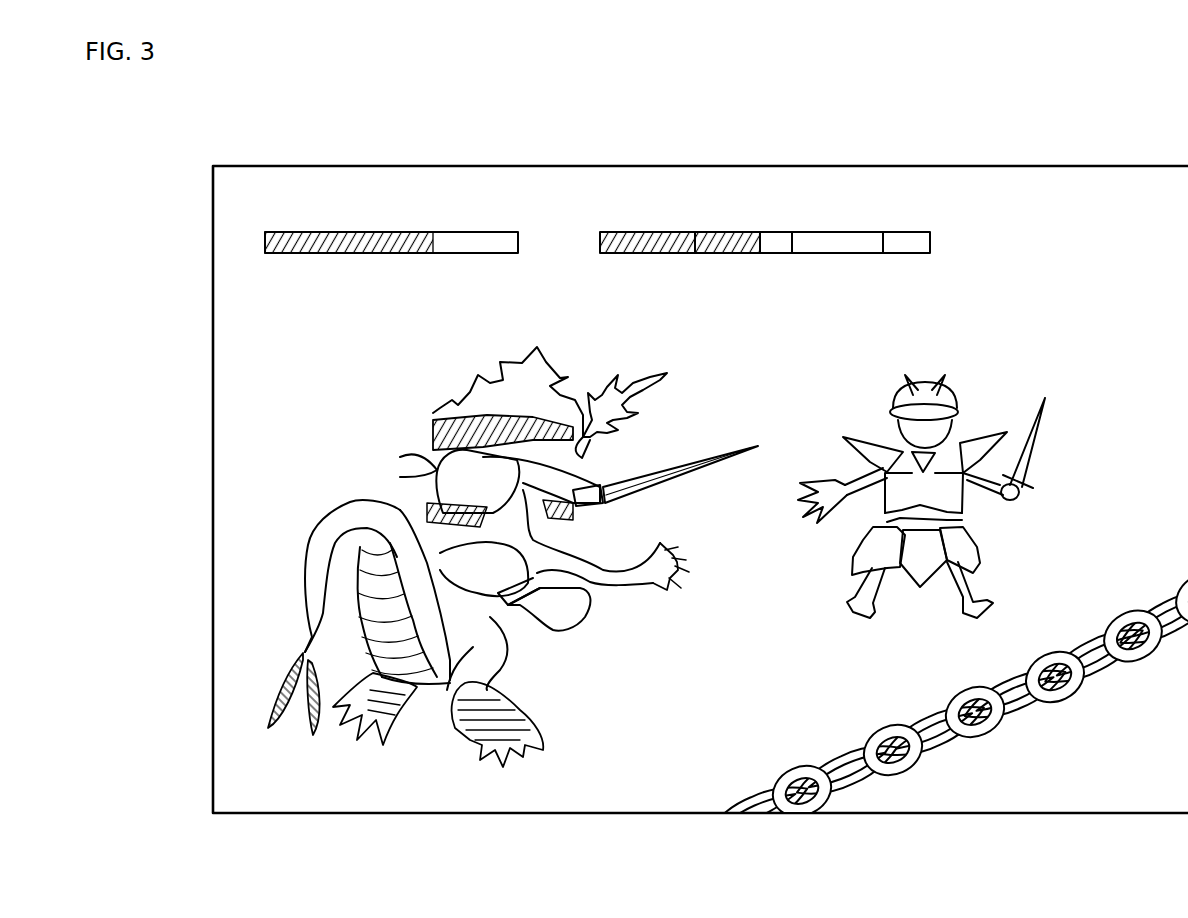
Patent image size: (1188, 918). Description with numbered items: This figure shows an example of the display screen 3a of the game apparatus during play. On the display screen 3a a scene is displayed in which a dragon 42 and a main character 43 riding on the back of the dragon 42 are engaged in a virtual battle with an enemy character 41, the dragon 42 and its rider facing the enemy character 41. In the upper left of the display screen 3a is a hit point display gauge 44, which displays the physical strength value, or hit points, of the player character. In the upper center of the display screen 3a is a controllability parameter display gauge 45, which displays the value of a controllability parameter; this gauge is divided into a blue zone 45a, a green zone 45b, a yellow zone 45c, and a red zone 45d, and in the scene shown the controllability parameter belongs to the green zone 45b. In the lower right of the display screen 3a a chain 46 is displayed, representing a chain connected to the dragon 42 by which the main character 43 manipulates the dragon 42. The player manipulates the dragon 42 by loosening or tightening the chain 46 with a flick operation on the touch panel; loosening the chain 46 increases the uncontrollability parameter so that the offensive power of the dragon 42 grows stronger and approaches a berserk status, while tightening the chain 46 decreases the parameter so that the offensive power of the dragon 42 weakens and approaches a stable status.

The display screen 3a is at (1130, 165).
The enemy character 41 is at (1040, 446).
The dragon 42 is at (462, 735).
The main character 43 is at (415, 440).
The hit point display gauge 44 is at (353, 232).
The controllability parameter display gauge 45 is at (772, 224).
The blue zone 45a is at (640, 253).
The green zone 45b is at (729, 253).
The yellow zone 45c is at (833, 253).
The red zone 45d is at (908, 253).
The chain 46 is at (990, 735).